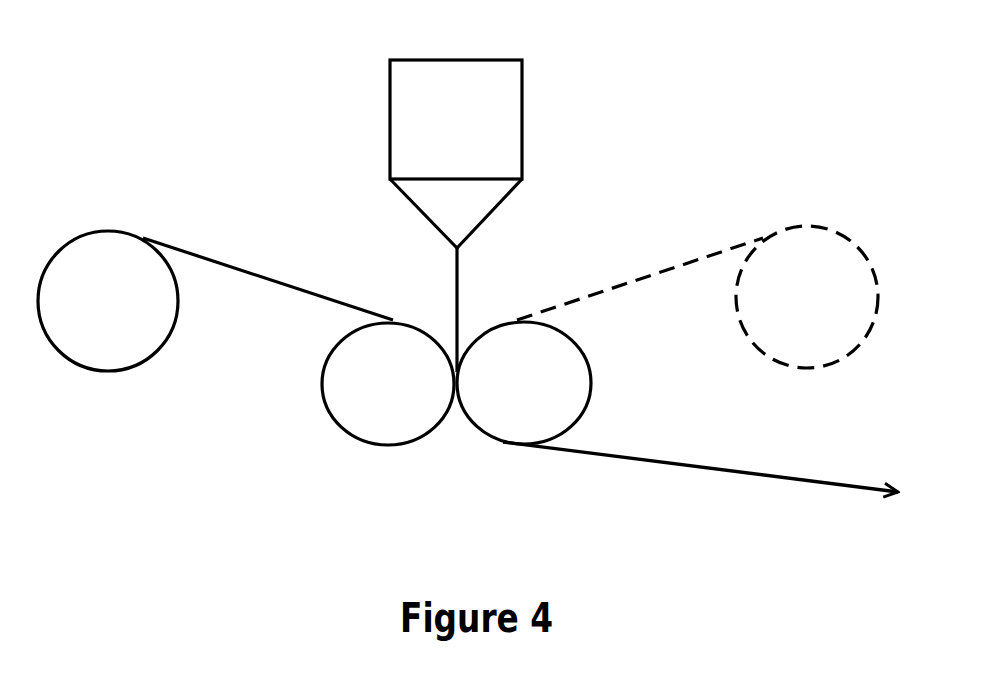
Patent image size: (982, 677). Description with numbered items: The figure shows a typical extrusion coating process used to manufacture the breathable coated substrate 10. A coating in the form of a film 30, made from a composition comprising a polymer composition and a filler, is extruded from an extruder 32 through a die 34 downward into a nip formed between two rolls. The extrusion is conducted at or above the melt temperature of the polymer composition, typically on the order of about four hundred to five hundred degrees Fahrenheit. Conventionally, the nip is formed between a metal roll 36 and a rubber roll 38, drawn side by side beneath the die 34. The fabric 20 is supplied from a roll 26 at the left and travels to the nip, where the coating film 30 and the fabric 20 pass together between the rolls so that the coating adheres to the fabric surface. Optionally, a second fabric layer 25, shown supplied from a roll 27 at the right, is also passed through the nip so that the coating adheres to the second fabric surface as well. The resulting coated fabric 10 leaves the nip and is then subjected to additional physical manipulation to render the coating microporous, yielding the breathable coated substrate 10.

The breathable coated substrate 10 is at (633, 470).
The fabric 20 is at (260, 267).
The second fabric layer 25 is at (677, 258).
The roll 26 is at (103, 272).
The roll 27 is at (810, 268).
The coating film 30 is at (463, 288).
The extruder 32 is at (497, 118).
The die 34 is at (442, 207).
The metal roll 36 is at (378, 384).
The rubber roll 38 is at (550, 367).